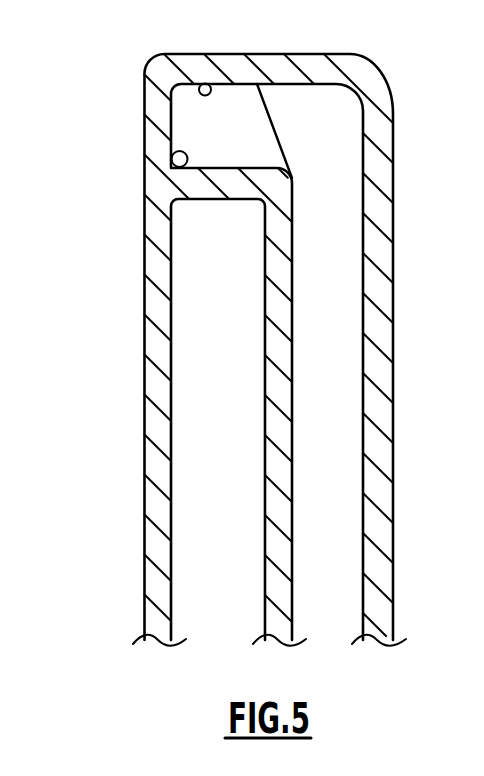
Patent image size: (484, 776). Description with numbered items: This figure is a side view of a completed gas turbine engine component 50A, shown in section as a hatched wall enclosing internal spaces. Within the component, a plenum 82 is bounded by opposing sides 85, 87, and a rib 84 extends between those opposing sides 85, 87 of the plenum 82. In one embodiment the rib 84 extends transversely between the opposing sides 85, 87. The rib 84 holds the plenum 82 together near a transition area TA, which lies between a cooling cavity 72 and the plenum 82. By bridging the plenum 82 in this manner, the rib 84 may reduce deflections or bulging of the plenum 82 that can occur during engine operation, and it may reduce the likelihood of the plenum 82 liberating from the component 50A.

The completed component 50A is at (124, 280).
The cooling cavity 72 is at (330, 371).
The transition area TA is at (322, 192).
The rib 84 is at (273, 127).
The plenum 82 is at (238, 110).
The opposing side of the plenum 85 is at (200, 84).
The opposing side of the plenum 87 is at (172, 164).